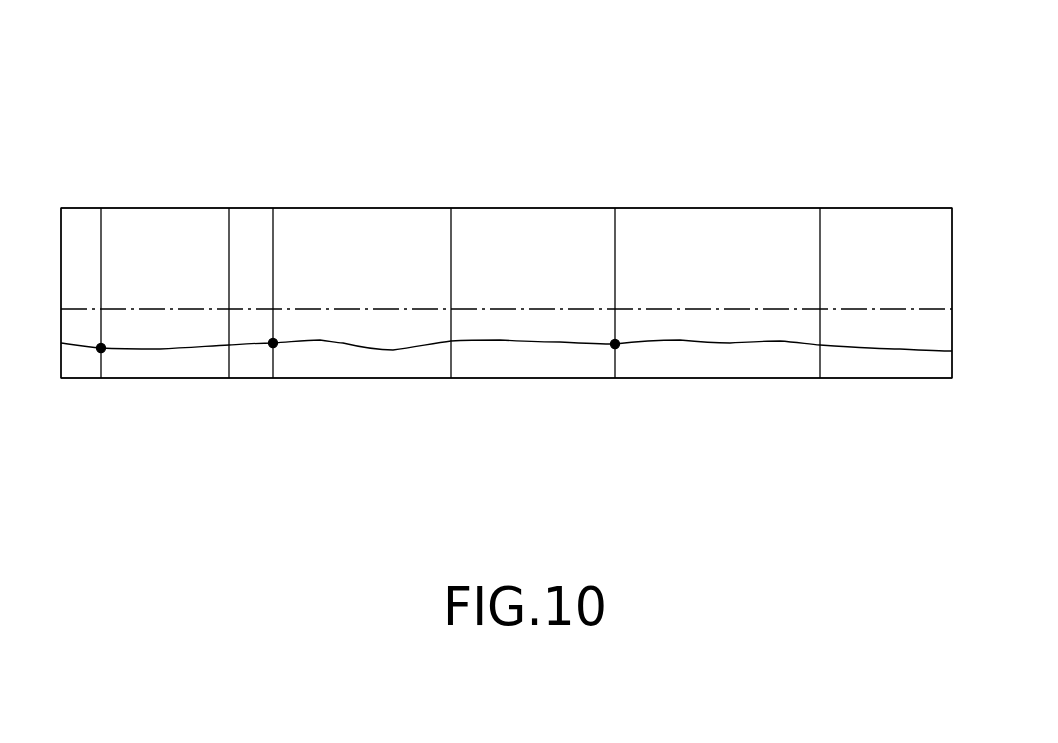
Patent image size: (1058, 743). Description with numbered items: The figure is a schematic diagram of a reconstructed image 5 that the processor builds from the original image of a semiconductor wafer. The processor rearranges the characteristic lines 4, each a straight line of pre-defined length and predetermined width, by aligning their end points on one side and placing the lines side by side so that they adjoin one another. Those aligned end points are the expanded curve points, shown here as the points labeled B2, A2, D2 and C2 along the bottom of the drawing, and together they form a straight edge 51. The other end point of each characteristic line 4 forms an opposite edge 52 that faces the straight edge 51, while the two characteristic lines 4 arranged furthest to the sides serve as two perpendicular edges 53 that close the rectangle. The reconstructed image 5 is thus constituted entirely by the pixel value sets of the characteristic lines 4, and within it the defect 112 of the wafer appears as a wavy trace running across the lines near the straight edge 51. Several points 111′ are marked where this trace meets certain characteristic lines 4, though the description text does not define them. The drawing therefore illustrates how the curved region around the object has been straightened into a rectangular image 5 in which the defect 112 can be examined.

The reconstructed image 5 is at (826, 112).
The opposite edge 52 is at (528, 208).
The straight edge 51 is at (377, 378).
The characteristic lines 4 is at (102, 237).
The perpendicular edges 53 is at (61, 227).
The defect 112 is at (510, 338).
The intersection points 111′ is at (101, 348).
The expanded curve point B2 is at (228, 400).
The expanded curve point A2 is at (452, 400).
The expanded curve point D2 is at (617, 400).
The expanded curve point C2 is at (823, 400).